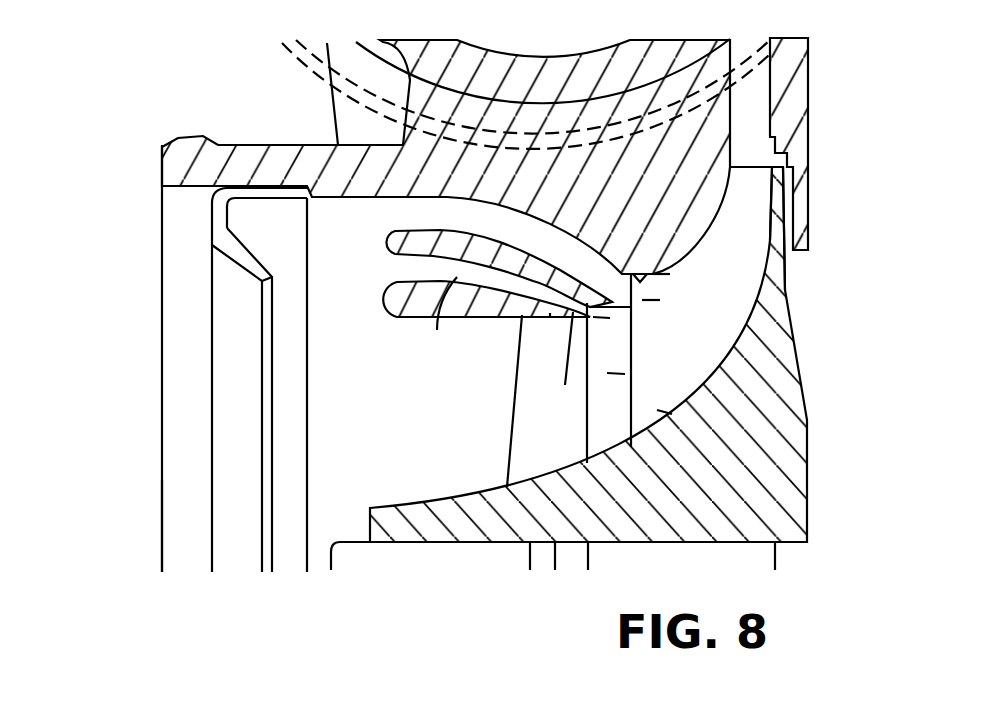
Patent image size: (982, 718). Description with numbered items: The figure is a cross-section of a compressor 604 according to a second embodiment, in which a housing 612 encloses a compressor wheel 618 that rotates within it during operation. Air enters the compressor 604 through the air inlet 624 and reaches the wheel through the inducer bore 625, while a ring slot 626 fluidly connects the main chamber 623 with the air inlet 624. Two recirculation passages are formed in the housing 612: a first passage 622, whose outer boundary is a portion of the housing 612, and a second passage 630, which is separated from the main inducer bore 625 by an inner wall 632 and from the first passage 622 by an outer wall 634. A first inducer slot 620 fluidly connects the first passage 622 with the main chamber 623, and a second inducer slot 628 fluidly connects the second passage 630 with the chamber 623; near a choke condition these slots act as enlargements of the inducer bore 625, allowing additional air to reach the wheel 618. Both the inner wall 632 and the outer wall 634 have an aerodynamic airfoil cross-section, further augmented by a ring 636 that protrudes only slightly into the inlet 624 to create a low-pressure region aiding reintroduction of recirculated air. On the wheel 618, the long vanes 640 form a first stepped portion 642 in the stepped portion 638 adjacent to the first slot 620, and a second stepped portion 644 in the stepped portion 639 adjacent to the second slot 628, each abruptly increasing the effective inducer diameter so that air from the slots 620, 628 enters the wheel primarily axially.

The compressor 604 is at (160, 540).
The housing 612 is at (262, 157).
The compressor wheel 618 is at (720, 511).
The first inducer slot 620 is at (565, 385).
The first passage 622 is at (523, 230).
The main chamber 623 is at (363, 254).
The air inlet 624 is at (155, 309).
The inducer bore 625 is at (417, 317).
The ring slot 626 is at (340, 270).
The second inducer slot 628 is at (653, 274).
The second passage 630 is at (437, 330).
The inner wall 632 is at (550, 317).
The outer wall 634 is at (430, 240).
The ring 636 is at (242, 562).
The stepped portion 638 is at (607, 373).
The stepped portion 639 is at (657, 410).
The long vanes 640 is at (523, 466).
The first stepped portion 642 is at (593, 317).
The second stepped portion 644 is at (642, 300).